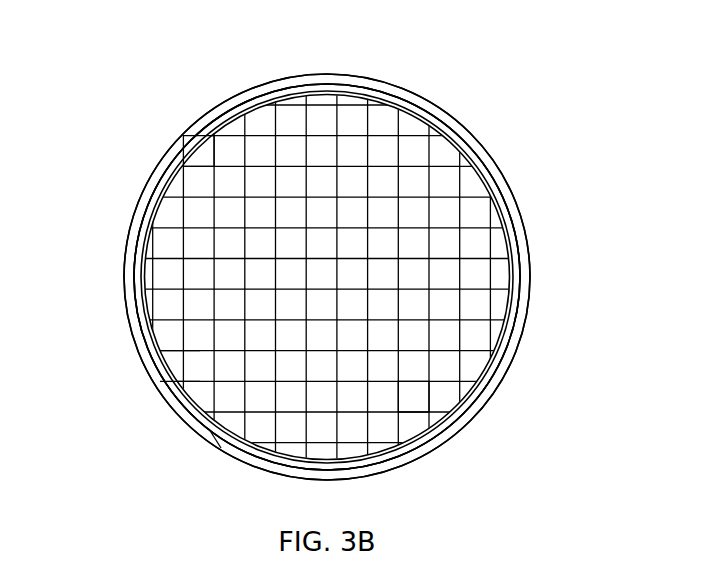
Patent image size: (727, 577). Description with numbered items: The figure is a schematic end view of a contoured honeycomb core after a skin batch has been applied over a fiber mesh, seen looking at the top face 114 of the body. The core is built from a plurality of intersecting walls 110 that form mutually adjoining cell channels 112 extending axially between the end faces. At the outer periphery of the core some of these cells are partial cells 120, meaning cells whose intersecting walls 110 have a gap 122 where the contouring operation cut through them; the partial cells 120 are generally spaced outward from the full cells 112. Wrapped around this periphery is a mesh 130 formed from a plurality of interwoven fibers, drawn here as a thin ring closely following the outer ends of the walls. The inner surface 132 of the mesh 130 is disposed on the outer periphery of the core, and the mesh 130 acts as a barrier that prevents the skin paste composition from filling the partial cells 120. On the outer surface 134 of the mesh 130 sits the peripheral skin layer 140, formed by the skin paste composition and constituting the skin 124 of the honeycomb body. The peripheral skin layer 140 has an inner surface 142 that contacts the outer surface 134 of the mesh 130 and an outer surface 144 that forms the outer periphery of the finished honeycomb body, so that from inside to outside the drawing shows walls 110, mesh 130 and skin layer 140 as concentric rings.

The intersecting walls 110 is at (235, 135).
The cell channels 112 is at (200, 175).
The top face 114 is at (422, 403).
The partial cells 120 is at (193, 398).
The gap 122 is at (220, 445).
The skin 124 is at (517, 330).
The mesh 130 is at (437, 118).
The inner surface of the mesh 132 is at (485, 178).
The outer surface of the mesh 134 is at (516, 252).
The peripheral skin layer 140 is at (155, 180).
The inner surface of the peripheral skin layer 142 is at (133, 245).
The outer surface of the peripheral skin layer 144 is at (122, 297).